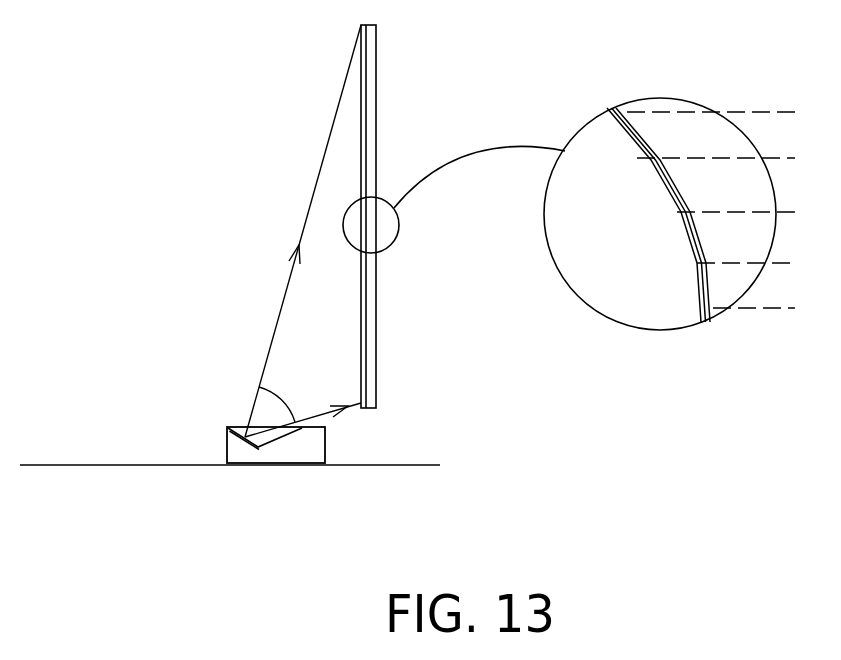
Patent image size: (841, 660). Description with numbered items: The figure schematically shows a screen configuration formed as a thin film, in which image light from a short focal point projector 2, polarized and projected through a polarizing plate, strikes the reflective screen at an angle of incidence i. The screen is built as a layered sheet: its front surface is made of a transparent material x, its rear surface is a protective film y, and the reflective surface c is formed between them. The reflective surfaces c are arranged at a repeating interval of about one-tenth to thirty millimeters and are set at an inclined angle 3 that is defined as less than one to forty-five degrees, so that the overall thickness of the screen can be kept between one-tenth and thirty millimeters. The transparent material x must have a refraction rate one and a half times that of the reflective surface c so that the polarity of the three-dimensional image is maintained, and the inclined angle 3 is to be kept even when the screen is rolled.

The short focal point projector 2 is at (299, 450).
The inclined angle 3 is at (707, 322).
The transparent material x is at (700, 302).
The protective film y is at (715, 312).
The reflective surface c is at (711, 210).
The angle of incidence i is at (281, 391).